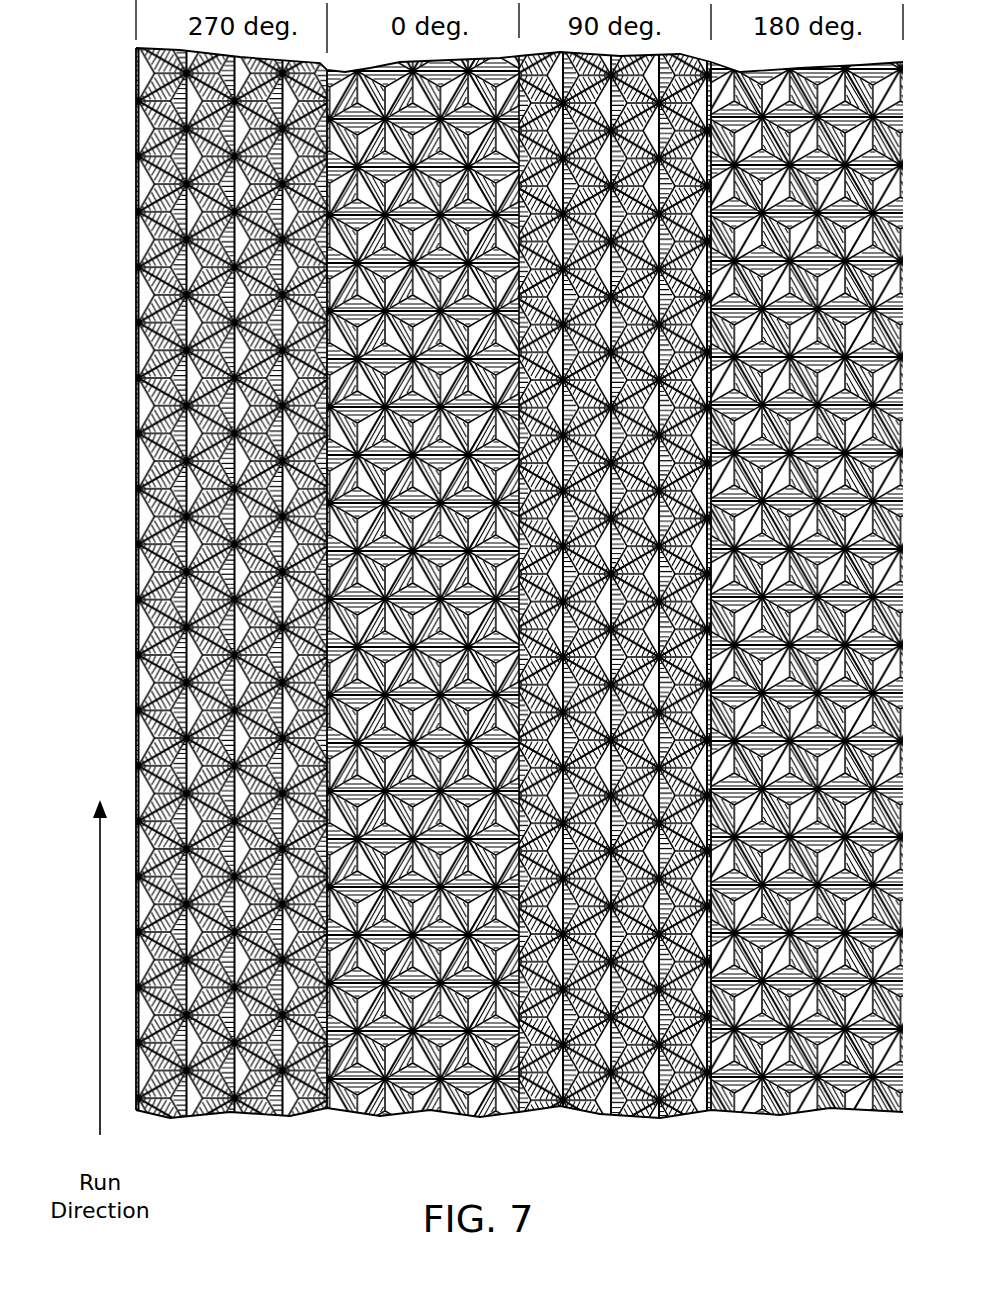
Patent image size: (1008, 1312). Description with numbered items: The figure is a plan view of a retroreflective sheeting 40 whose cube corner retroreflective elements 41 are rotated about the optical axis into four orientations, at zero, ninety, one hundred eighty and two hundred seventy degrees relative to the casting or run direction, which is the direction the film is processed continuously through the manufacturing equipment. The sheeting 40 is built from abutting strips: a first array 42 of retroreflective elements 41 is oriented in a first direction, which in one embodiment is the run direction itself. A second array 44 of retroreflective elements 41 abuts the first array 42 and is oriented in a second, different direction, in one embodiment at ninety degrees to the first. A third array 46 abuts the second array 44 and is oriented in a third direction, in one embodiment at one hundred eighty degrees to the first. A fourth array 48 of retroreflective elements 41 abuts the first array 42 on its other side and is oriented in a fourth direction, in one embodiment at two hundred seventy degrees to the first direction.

The retroreflective sheeting 40 is at (493, 606).
The retroreflective elements 41 is at (497, 1098).
The first array 42 is at (433, 1110).
The second array 44 is at (638, 1116).
The third array 46 is at (828, 1114).
The fourth array 48 is at (228, 1120).